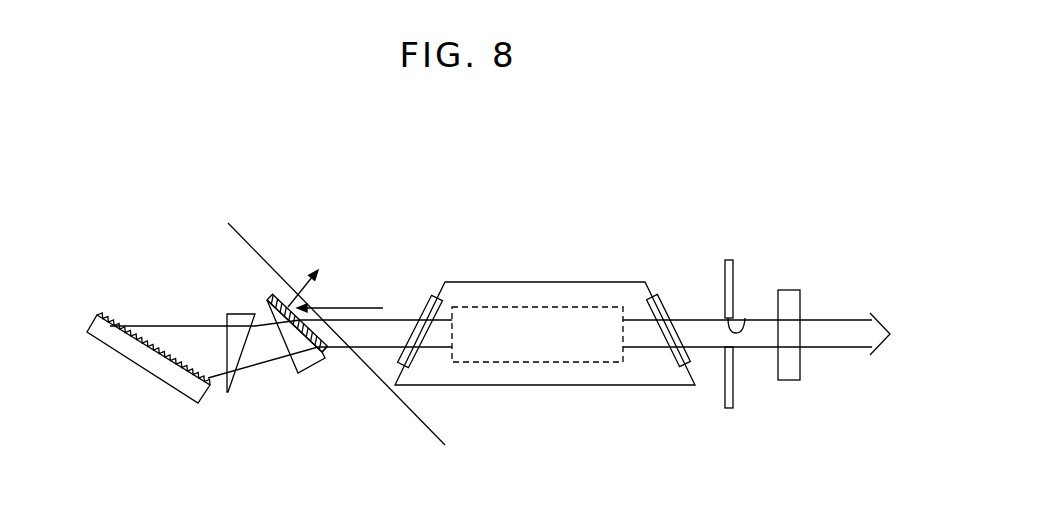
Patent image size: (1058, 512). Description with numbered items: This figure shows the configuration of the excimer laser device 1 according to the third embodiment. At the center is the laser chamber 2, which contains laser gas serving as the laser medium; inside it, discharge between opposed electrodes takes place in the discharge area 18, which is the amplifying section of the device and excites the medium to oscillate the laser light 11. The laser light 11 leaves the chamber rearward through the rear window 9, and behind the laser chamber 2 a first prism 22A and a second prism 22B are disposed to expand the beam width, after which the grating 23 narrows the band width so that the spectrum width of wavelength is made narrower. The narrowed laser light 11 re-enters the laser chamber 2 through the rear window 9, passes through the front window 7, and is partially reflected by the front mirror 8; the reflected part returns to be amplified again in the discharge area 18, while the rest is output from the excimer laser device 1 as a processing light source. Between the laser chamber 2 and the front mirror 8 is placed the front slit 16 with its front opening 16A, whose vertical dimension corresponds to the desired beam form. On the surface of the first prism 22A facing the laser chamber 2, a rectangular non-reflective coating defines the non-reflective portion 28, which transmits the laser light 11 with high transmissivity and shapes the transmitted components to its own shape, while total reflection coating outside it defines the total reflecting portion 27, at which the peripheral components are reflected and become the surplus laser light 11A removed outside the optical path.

The excimer laser device 1 is at (700, 150).
The laser chamber 2 is at (572, 282).
The front window 7 is at (665, 298).
The front mirror 8 is at (790, 290).
The rear window 9 is at (236, 224).
The laser light 11 is at (838, 333).
The surplus laser light 11A is at (303, 291).
The front slit 16 is at (728, 260).
The front opening 16A is at (745, 318).
The discharge area 18 is at (492, 306).
The first prism 22A is at (293, 375).
The second prism 22B is at (228, 392).
The grating 23 is at (157, 373).
The total reflecting portion 27 is at (268, 298).
The non-reflective portion 28 is at (332, 345).